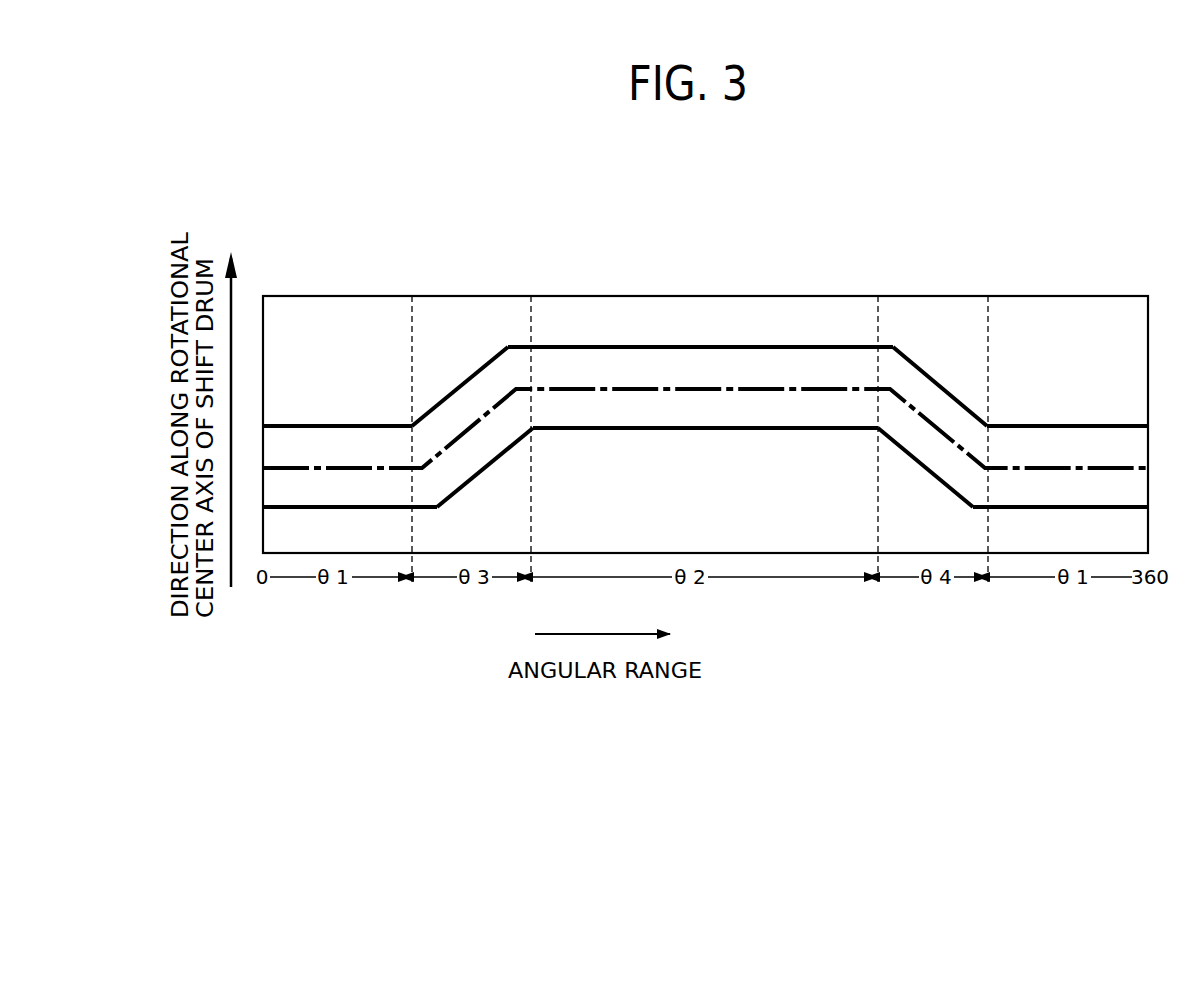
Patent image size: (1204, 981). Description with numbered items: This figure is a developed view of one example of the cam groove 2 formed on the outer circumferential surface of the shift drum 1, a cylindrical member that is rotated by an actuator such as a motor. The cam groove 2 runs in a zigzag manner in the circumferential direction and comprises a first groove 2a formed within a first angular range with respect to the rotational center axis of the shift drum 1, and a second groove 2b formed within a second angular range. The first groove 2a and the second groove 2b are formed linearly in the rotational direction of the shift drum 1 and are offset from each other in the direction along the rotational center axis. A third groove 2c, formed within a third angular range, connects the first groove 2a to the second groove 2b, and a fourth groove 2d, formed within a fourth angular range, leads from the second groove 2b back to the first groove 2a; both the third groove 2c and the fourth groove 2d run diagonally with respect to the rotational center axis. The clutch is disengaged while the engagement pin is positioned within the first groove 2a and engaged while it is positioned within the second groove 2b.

The shift drum 1 is at (312, 318).
The cam groove 2 is at (632, 344).
The first groove 2a is at (336, 437).
The second groove 2b is at (730, 365).
The third groove 2c is at (483, 385).
The fourth groove 2d is at (916, 385).